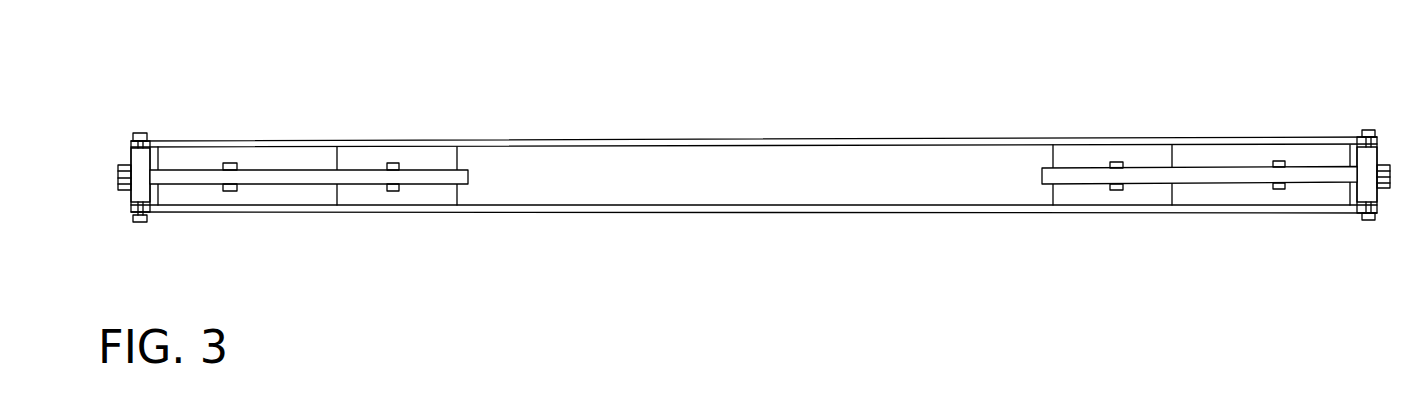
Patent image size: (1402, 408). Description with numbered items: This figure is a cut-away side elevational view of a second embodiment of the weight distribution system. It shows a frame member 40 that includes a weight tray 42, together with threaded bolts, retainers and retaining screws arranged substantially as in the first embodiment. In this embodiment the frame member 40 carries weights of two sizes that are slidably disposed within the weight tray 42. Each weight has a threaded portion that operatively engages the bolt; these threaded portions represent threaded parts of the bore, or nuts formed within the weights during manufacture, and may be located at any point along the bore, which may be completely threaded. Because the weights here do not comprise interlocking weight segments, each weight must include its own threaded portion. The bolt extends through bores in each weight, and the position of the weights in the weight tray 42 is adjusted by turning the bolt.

The frame member 40 is at (754, 169).
The weight tray 42 is at (653, 138).